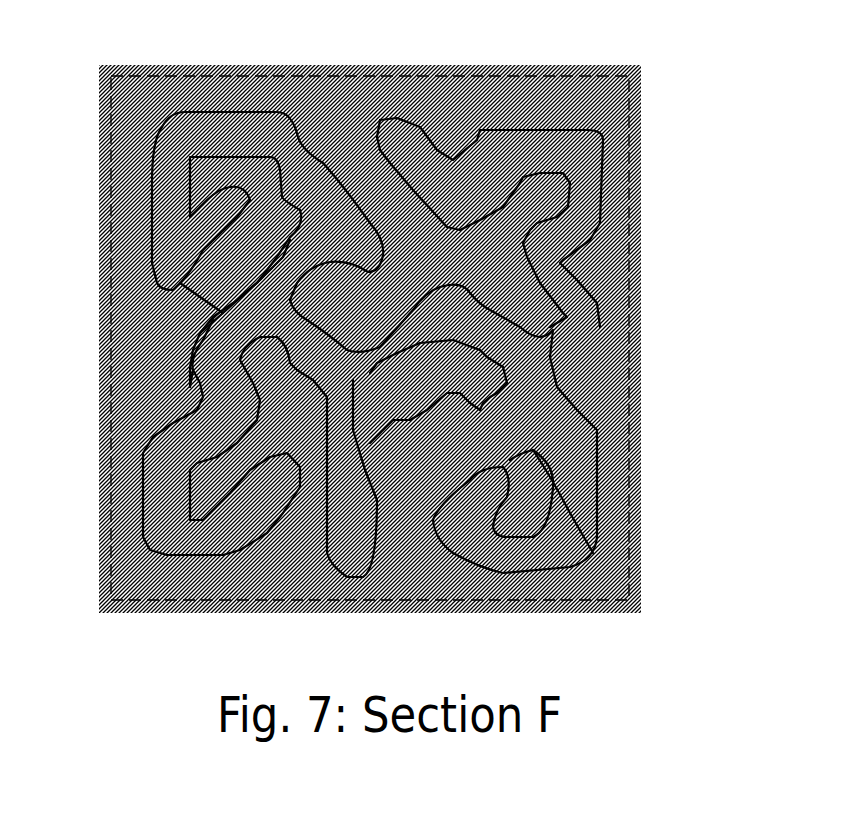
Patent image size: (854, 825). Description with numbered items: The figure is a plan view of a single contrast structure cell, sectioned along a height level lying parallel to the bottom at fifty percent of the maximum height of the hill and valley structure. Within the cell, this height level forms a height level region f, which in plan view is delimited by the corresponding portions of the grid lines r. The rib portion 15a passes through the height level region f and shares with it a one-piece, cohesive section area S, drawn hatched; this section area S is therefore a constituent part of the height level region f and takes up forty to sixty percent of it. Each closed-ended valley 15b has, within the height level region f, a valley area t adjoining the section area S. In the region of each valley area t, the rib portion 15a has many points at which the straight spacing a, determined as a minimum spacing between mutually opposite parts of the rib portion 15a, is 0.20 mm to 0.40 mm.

The valley area t is at (400, 220).
The grid line r is at (643, 105).
The section area S is at (605, 233).
The height level region f is at (643, 363).
The rib portion 15a is at (605, 498).
The closed-ended valley 15b is at (283, 537).
The straight spacing a is at (533, 232).